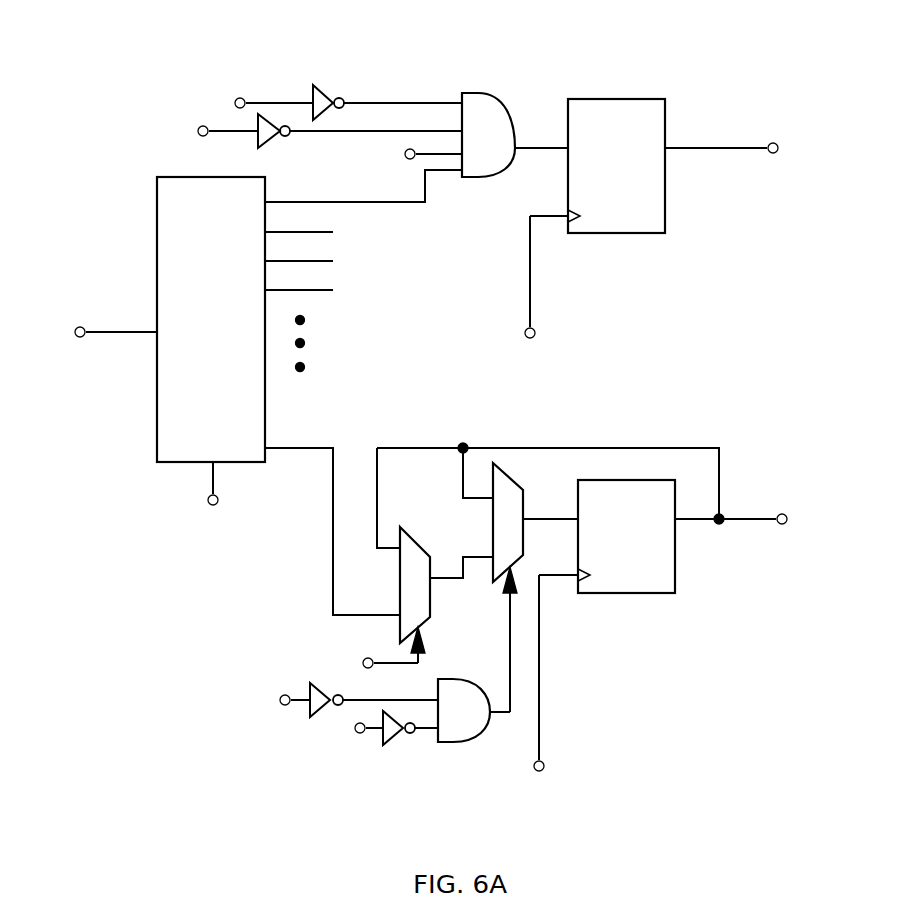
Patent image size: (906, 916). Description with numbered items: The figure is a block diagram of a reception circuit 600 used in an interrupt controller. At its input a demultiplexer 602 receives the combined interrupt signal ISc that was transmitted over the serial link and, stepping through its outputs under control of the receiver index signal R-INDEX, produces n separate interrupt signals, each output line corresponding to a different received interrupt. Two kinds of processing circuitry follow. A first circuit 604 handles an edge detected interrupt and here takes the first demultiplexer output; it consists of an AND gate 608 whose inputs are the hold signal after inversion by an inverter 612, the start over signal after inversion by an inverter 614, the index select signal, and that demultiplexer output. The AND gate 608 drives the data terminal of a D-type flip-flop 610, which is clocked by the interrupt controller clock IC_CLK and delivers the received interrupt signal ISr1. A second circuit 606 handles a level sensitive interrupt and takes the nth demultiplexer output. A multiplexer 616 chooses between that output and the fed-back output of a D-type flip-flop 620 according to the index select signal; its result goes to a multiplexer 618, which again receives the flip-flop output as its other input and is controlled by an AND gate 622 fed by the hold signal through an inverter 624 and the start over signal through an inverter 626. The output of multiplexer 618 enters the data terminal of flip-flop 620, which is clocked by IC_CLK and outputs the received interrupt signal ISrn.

The reception circuit 600 is at (744, 80).
The demultiplexer 602 is at (156, 407).
The first circuit 604 is at (459, 239).
The second circuit 606 is at (461, 391).
The AND gate 608 is at (500, 82).
The D-type flip-flop 610 is at (665, 200).
The inverter 612 is at (333, 78).
The inverter 614 is at (258, 141).
The multiplexer 616 is at (438, 520).
The multiplexer 618 is at (510, 482).
The D-type flip-flop 620 is at (675, 573).
The AND gate 622 is at (465, 680).
The inverter 624 is at (323, 686).
The inverter 626 is at (397, 745).